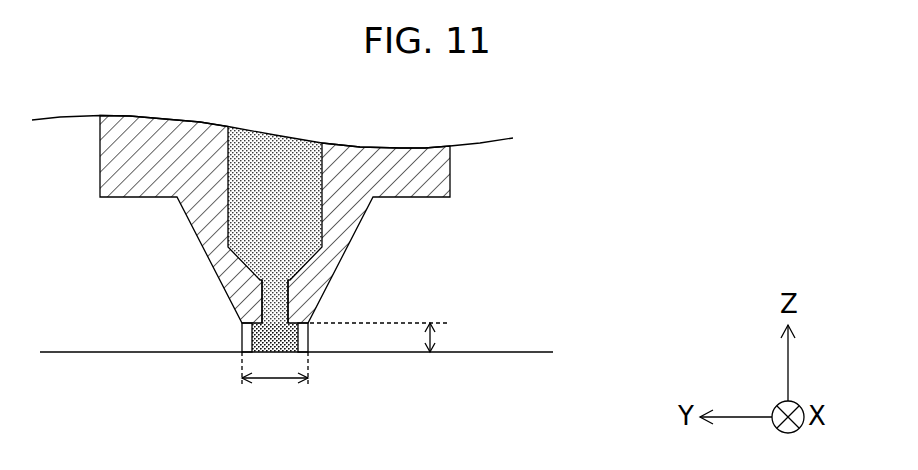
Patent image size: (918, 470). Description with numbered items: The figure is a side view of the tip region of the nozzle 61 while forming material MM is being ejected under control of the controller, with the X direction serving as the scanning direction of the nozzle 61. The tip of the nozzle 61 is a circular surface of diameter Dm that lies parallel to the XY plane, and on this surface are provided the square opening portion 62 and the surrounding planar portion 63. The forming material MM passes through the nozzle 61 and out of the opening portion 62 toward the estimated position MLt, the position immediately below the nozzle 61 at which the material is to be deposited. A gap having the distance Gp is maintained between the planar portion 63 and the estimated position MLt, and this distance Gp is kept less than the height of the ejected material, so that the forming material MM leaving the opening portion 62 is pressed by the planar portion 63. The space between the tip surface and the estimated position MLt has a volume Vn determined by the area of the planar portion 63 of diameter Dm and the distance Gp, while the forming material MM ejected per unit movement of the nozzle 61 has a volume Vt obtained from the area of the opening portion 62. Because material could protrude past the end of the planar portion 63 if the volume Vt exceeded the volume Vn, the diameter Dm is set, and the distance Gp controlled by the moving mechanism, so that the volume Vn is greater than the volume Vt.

The nozzle 61 is at (353, 237).
The opening portion 62 is at (302, 304).
The planar portion 63 is at (247, 346).
The forming material MM is at (283, 148).
The estimated position MLt is at (528, 352).
The distance Gp is at (402, 336).
The diameter Dm is at (275, 384).
The volume Vt is at (272, 334).
The volume Vn is at (308, 338).